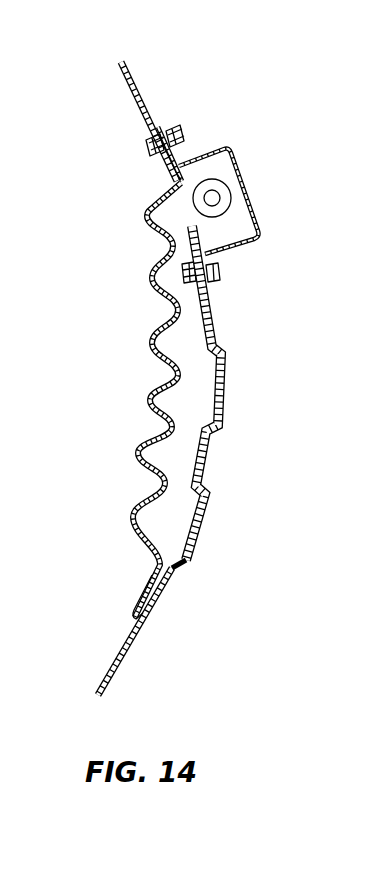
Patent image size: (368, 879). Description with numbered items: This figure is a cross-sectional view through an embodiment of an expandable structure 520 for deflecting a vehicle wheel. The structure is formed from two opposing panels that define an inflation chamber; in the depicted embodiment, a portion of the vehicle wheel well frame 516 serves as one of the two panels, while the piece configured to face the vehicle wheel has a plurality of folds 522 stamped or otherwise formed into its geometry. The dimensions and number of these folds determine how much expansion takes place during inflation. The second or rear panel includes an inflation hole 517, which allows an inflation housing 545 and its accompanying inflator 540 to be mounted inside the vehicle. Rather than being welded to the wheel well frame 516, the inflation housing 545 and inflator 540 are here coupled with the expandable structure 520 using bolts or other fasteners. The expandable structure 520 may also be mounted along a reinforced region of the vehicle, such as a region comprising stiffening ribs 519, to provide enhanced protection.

The vehicle wheel well frame 516 is at (146, 636).
The inflation hole 517 is at (184, 194).
The stiffening ribs 519 is at (224, 396).
The expandable structure 520 is at (129, 513).
The folds 522 is at (96, 401).
The inflator 540 is at (218, 191).
The inflation housing 545 is at (259, 237).